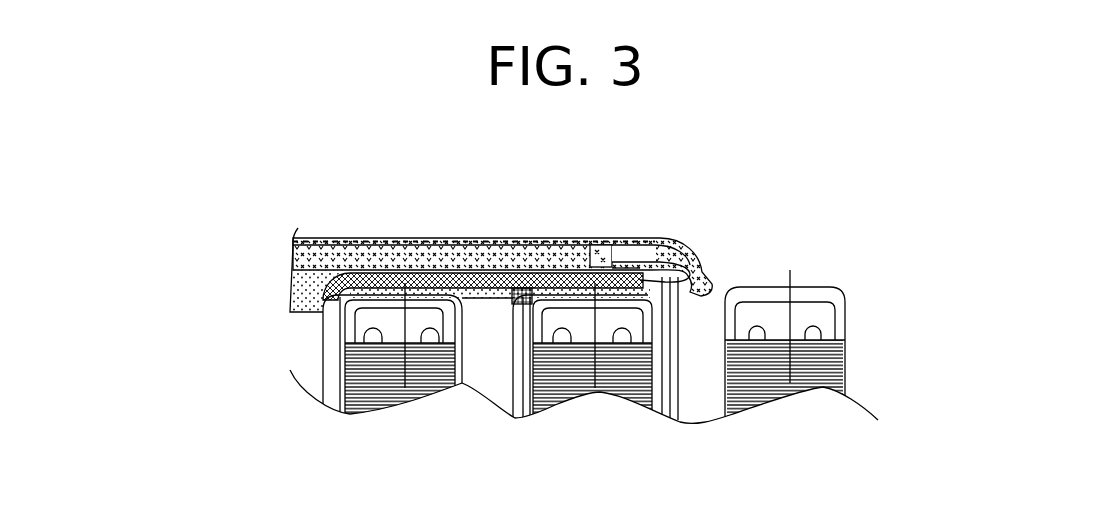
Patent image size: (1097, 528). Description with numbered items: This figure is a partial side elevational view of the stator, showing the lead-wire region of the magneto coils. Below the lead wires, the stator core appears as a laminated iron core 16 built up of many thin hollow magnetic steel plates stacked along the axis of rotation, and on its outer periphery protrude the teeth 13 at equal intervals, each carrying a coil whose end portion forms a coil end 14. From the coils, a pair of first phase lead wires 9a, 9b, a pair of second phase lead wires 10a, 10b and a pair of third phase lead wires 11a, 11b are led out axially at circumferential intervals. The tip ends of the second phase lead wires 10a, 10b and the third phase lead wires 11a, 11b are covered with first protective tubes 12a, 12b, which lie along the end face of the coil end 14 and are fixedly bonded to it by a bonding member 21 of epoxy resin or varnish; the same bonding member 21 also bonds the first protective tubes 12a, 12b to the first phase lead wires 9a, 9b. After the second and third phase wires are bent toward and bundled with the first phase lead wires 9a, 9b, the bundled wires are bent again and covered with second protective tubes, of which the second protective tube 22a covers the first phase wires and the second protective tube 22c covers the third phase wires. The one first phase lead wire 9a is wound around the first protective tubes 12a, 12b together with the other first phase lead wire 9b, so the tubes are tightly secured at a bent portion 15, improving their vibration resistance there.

The first phase lead wire 9a is at (677, 398).
The first phase lead wire 9b is at (660, 398).
The second phase lead wire 10a is at (343, 396).
The second phase lead wire 10b is at (328, 378).
The third phase lead wire 11a is at (533, 391).
The third phase lead wire 11b is at (520, 391).
The first protective tube 12a is at (297, 290).
The first protective tube 12b is at (516, 297).
The tooth 13 is at (433, 368).
The coil end 14 is at (383, 283).
The bent portion 15 is at (678, 240).
The laminated iron core 16 is at (380, 388).
The bonding member 21 is at (377, 277).
The second protective tube 22a is at (460, 240).
The second protective tube 22c is at (527, 243).